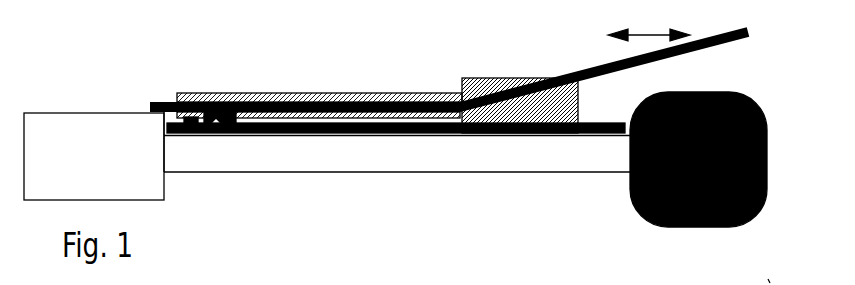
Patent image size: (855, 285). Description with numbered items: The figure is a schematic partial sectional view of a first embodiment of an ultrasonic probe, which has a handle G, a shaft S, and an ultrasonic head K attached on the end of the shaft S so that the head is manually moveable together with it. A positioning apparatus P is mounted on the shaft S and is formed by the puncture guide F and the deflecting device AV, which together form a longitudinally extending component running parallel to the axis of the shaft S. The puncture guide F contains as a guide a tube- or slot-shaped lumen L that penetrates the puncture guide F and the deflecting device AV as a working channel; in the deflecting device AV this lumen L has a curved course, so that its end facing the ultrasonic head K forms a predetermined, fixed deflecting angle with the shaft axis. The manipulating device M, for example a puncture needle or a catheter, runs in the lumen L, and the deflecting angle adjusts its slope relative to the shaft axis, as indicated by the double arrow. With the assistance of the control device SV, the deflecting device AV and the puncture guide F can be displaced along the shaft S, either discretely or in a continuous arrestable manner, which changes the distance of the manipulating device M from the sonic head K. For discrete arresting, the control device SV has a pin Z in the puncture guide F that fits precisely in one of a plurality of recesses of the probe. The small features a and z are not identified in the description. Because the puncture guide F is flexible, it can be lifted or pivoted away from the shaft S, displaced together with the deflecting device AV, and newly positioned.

The handle G is at (80, 125).
The puncture guide F is at (248, 98).
The positioning apparatus P is at (360, 73).
The deflecting device AV is at (478, 77).
The manipulating device M is at (633, 60).
The control device SV is at (248, 210).
The spacing a is at (190, 128).
The intermediate element z is at (223, 128).
The lumen L is at (442, 117).
The shaft S is at (558, 163).
The ultrasonic head K is at (720, 228).
The pin Z is at (771, 268).